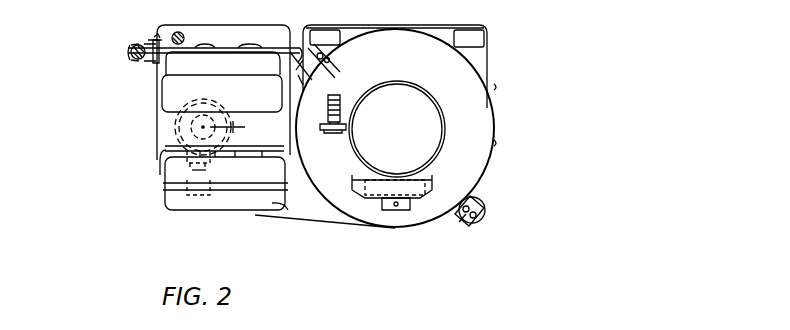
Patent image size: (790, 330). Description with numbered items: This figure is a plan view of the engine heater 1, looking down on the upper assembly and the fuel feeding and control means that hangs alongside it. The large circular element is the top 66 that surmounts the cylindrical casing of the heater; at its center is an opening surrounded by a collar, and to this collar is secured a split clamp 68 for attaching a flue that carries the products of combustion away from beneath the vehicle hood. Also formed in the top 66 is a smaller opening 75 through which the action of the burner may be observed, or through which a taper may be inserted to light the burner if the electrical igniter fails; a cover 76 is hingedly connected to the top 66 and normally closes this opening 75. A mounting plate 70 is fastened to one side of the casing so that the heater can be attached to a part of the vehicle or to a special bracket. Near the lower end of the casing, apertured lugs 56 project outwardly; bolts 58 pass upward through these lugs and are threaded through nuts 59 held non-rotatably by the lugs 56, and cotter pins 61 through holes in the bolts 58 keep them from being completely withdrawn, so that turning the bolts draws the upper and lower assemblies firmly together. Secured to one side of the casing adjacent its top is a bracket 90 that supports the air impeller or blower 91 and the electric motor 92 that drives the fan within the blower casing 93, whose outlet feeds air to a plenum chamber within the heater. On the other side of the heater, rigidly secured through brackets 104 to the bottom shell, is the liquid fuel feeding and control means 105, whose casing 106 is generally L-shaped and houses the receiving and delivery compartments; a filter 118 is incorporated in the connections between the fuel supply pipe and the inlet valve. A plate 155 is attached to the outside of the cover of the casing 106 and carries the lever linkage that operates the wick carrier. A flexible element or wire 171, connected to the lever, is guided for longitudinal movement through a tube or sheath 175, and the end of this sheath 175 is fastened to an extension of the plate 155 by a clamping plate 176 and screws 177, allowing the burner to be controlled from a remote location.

The engine heater 1 is at (503, 115).
The apertured lugs 56 is at (295, 42).
The bolts 58 is at (478, 224).
The nuts 59 is at (462, 222).
The cotter pins 61 is at (484, 205).
The top 66 is at (395, 128).
The split clamp 68 is at (434, 97).
The mounting plate 70 is at (392, 27).
The opening 75 is at (422, 195).
The cover 76 is at (368, 190).
The bracket 90 is at (240, 158).
The air impeller or blower 91 is at (223, 205).
The electric motor 92 is at (222, 93).
The blower casing 93 is at (325, 215).
The brackets 104 is at (292, 63).
The liquid fuel feeding and control means 105 is at (150, 118).
The casing 106 is at (163, 150).
The filter 118 is at (225, 127).
The plate 155 is at (174, 55).
The flexible element or wire 171 is at (136, 62).
The tube or sheath 175 is at (128, 52).
The clamping plate 176 is at (150, 64).
The screws 177 is at (156, 38).